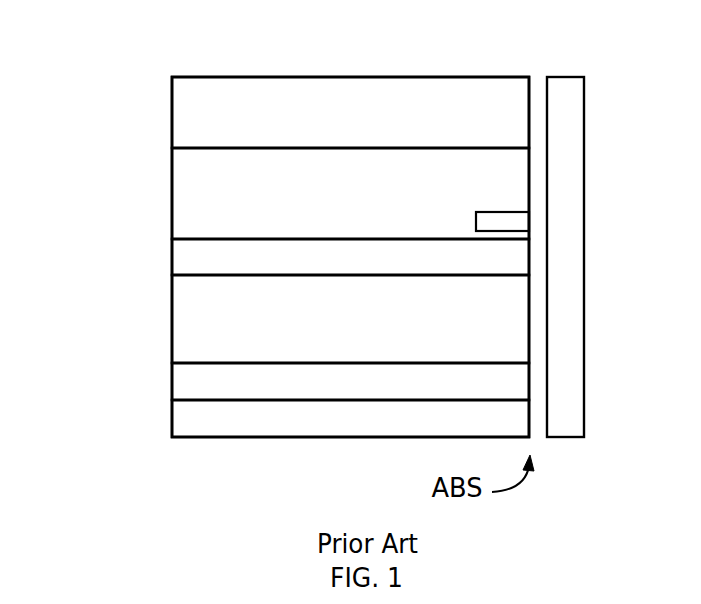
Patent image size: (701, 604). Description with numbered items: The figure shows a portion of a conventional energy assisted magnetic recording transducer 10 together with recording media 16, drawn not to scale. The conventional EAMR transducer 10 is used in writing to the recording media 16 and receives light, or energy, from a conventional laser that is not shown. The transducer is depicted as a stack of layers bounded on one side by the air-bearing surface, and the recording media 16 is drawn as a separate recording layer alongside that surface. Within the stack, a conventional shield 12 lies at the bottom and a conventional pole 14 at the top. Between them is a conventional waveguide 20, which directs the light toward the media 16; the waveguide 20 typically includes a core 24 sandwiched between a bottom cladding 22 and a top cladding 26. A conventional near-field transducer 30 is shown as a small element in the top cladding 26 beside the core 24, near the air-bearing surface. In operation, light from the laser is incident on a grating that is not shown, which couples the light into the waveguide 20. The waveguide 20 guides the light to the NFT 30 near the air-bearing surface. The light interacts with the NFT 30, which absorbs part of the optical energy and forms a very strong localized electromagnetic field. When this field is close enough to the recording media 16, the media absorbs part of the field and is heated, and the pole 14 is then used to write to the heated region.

The energy assisted magnetic recording (EAMR) transducer 10 is at (352, 36).
The shield 12 is at (172, 427).
The pole 14 is at (172, 113).
The recording media 16 is at (581, 263).
The waveguide 20 is at (82, 275).
The cladding 22 is at (172, 348).
The core 24 is at (172, 257).
The cladding 26 is at (172, 185).
The near-field transducer (NFT) 30 is at (511, 212).